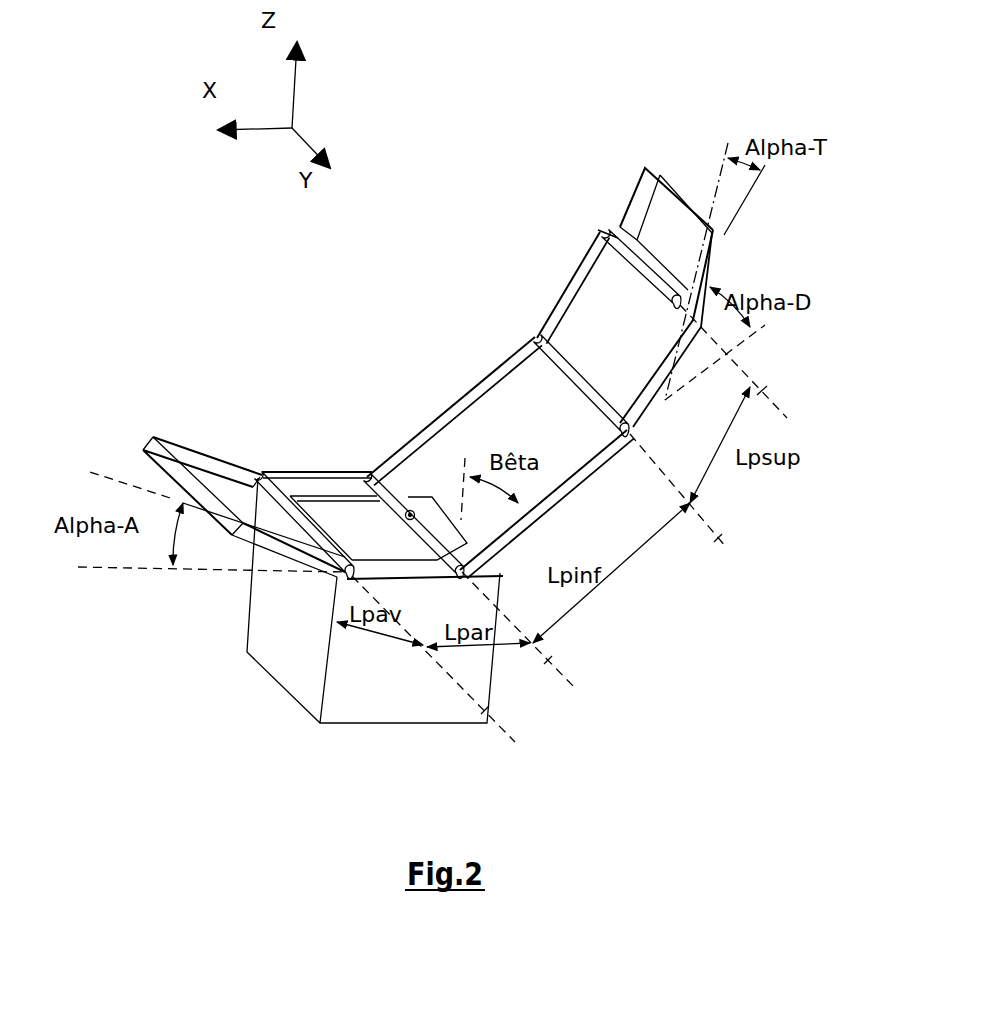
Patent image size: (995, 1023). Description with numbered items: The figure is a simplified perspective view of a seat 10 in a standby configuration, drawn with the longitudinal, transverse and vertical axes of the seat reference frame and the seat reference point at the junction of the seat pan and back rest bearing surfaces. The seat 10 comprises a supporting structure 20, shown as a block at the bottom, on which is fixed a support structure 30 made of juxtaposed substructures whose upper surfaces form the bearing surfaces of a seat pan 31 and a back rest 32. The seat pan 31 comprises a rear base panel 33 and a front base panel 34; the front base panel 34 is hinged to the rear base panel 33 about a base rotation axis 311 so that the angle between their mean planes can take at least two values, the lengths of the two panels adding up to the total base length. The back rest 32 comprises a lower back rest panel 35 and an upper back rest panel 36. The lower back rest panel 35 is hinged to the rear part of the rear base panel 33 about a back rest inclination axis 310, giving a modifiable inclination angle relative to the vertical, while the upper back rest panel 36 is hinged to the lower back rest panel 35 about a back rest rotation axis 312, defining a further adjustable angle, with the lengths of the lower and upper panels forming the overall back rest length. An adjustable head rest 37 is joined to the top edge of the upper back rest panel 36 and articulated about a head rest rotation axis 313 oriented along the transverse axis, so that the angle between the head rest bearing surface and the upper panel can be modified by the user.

The seat 10 is at (425, 459).
The supporting structure 20 is at (347, 710).
The support structure 30 is at (587, 480).
The seat pan 31 is at (323, 462).
The back rest 32 is at (539, 348).
The rear base panel 33 is at (378, 502).
The front base panel 34 is at (234, 488).
The lower back rest panel 35 is at (500, 457).
The upper back rest panel 36 is at (587, 313).
The head rest 37 is at (666, 204).
The back rest inclination axis 310 is at (552, 658).
The base rotation axis 311 is at (489, 708).
The back rest rotation axis 312 is at (716, 538).
The head rest rotation axis 313 is at (767, 388).